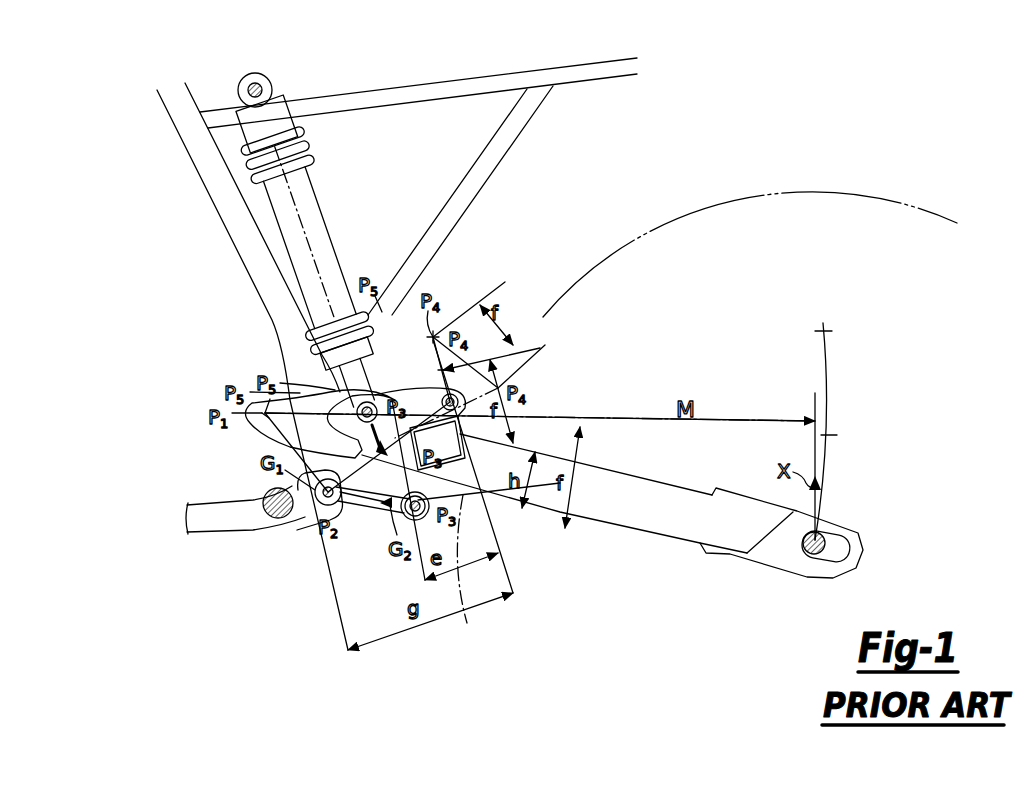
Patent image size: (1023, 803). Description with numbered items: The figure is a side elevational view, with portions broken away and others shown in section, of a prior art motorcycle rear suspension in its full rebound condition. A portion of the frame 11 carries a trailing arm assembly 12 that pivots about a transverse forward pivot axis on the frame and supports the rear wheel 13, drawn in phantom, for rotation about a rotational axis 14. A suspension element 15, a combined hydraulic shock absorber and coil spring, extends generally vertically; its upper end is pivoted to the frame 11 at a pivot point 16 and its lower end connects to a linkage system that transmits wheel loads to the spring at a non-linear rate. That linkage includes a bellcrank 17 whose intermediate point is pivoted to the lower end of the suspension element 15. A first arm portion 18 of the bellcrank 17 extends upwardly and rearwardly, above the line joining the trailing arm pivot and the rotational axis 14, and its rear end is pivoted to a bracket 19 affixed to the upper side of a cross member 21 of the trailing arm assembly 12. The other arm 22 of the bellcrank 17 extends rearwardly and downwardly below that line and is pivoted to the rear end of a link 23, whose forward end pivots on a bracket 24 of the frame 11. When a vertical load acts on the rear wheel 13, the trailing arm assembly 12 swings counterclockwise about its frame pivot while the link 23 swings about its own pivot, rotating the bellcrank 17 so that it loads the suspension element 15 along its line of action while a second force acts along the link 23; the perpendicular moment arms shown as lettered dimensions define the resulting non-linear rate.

The frame 11 is at (216, 224).
The trailing arm assembly 12 is at (649, 490).
The rear wheel 13 is at (786, 193).
The rotational axis 14 is at (826, 538).
The suspension element 15 is at (316, 248).
The pivot point 16 is at (263, 85).
The bellcrank 17 is at (353, 435).
The first arm portion 18 is at (414, 388).
The bracket 19 is at (524, 362).
The cross member 21 is at (466, 477).
The other arm 22 is at (320, 497).
The link 23 is at (375, 520).
The bracket 24 is at (303, 527).